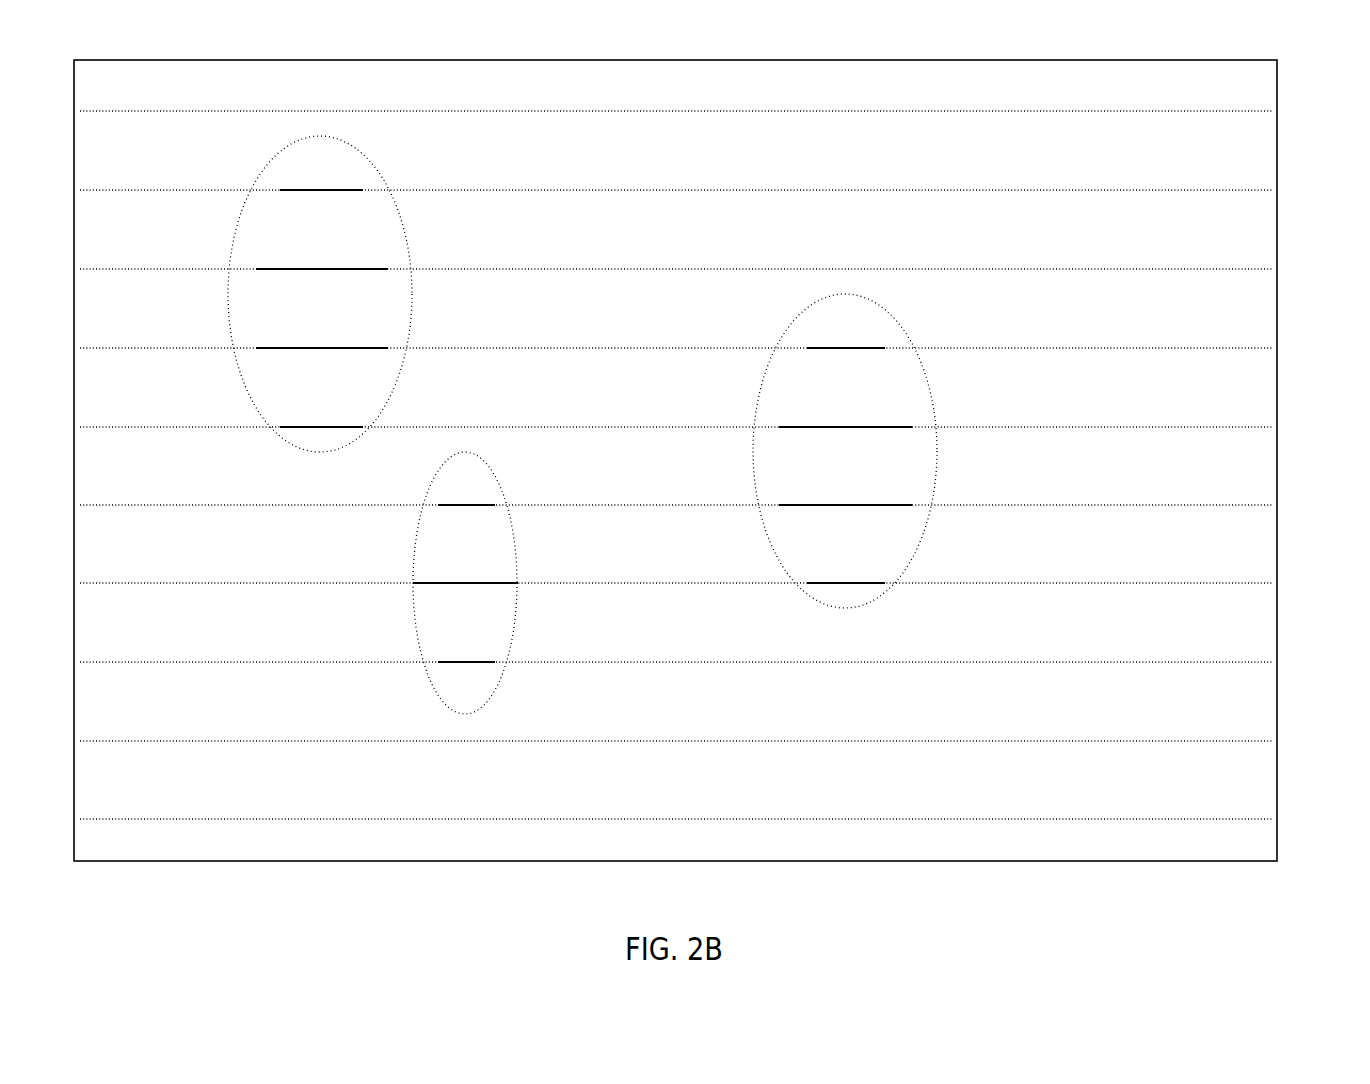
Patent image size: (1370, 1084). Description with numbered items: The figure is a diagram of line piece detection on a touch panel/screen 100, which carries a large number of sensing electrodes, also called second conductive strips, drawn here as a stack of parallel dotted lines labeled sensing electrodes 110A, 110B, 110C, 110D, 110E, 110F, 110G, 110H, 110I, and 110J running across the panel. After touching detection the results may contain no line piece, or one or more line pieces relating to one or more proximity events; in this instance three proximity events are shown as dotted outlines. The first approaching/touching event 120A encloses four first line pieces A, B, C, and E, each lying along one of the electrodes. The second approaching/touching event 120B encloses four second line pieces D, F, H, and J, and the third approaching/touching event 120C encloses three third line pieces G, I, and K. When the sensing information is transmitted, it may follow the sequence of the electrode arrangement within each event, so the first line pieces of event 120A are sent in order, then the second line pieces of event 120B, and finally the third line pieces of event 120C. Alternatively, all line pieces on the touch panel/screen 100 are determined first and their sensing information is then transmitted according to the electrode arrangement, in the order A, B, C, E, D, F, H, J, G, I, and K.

The touch panel/screen 100 is at (231, 862).
The sensing electrode 110A is at (1224, 111).
The sensing electrode 110B is at (1224, 190).
The sensing electrode 110C is at (1224, 269).
The sensing electrode 110D is at (1224, 348).
The sensing electrode 110E is at (1224, 427).
The sensing electrode 110F is at (1224, 505).
The sensing electrode 110G is at (1224, 583).
The sensing electrode 110H is at (1224, 662).
The sensing electrode 110I is at (1224, 741).
The sensing electrode 110J is at (1224, 819).
The first approaching/touching event 120A is at (406, 240).
The second approaching/touching event 120B is at (935, 477).
The third approaching/touching event 120C is at (495, 689).